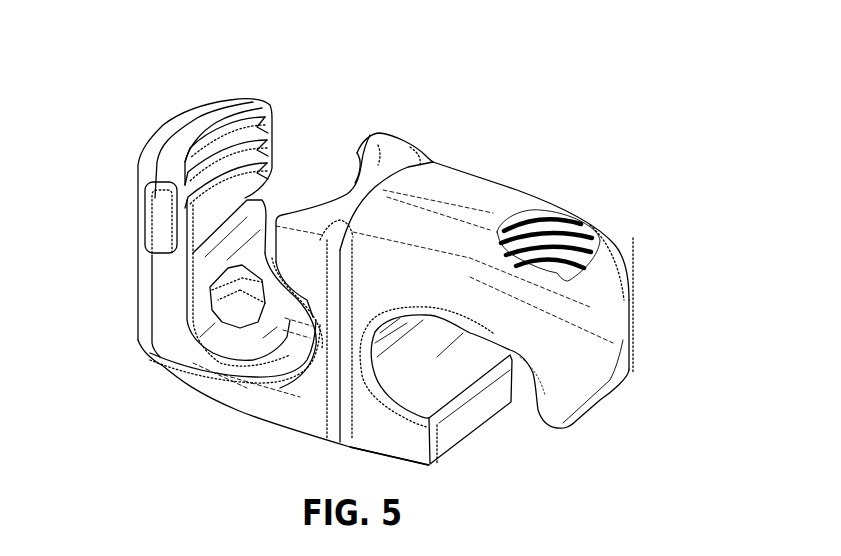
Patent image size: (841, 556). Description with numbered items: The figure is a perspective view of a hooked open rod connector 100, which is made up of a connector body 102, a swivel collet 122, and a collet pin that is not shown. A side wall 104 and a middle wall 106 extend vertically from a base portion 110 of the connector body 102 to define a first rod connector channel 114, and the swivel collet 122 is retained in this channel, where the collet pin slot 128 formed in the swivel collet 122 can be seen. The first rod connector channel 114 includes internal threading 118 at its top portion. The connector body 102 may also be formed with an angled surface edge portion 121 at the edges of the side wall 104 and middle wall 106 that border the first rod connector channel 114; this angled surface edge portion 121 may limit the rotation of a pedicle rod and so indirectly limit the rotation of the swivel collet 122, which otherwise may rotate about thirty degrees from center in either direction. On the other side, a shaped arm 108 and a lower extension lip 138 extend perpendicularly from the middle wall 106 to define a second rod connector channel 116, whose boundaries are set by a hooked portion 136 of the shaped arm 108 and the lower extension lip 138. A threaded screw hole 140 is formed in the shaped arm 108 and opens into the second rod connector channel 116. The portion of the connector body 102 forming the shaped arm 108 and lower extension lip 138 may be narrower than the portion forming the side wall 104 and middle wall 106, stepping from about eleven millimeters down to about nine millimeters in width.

The open rod connector 100 is at (163, 62).
The connector body 102 is at (153, 354).
The side wall 104 is at (138, 196).
The middle wall 106 is at (342, 250).
The shaped arm 108 is at (471, 207).
The base portion 110 is at (277, 427).
The first rod connector channel 114 is at (313, 168).
The second rod connector channel 116 is at (520, 418).
The internal threading 118 is at (220, 162).
The angled surface edge portion 121 is at (175, 315).
The swivel collet 122 is at (235, 343).
The collet pin slot 128 is at (222, 299).
The hooked portion 136 is at (627, 342).
The lower extension lip 138 is at (437, 430).
The threaded screw hole 140 is at (558, 227).